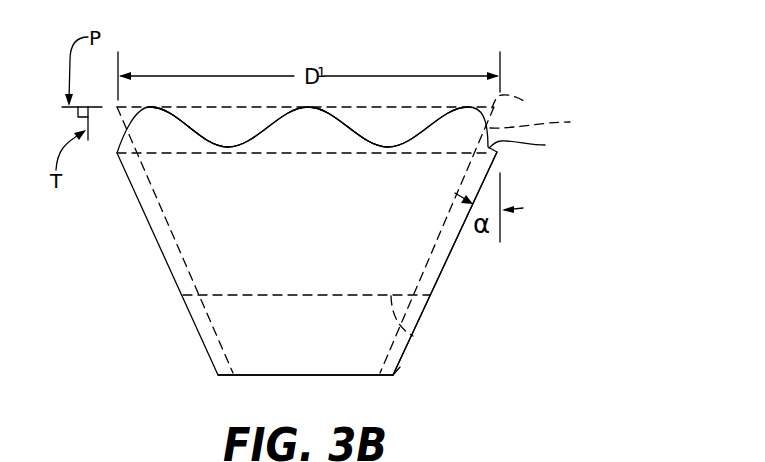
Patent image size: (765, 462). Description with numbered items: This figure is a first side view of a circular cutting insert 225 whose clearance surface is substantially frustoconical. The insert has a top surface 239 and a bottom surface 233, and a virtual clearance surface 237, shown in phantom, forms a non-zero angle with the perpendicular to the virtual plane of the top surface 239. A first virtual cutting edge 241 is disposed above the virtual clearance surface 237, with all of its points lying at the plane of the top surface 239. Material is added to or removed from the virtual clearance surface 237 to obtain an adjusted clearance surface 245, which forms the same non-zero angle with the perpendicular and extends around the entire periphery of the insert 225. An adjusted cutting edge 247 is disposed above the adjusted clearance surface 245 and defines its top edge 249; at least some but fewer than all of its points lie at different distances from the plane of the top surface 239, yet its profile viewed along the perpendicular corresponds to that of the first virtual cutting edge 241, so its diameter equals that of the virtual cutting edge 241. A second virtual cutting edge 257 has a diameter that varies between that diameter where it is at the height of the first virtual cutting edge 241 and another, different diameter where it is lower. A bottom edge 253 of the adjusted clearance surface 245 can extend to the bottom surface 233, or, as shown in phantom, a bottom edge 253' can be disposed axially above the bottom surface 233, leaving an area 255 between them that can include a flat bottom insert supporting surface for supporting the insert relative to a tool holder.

The cutting insert 225 is at (536, 190).
The bottom surface 233 is at (332, 378).
The virtual clearance surface 237 is at (546, 123).
The top surface 239 is at (386, 127).
The first virtual cutting edge 241 is at (524, 105).
The adjusted clearance surface 245 is at (440, 296).
The adjusted cutting edge 247 is at (186, 138).
The top edge of the adjusted clearance surface 249 is at (533, 148).
The bottom edge of the adjusted clearance surface 253 is at (434, 379).
The bottom edge of the adjusted clearance surface 253' is at (430, 324).
The area between the bottom edge and the bottom surface 255 is at (219, 337).
The second virtual cutting edge 257 is at (348, 132).